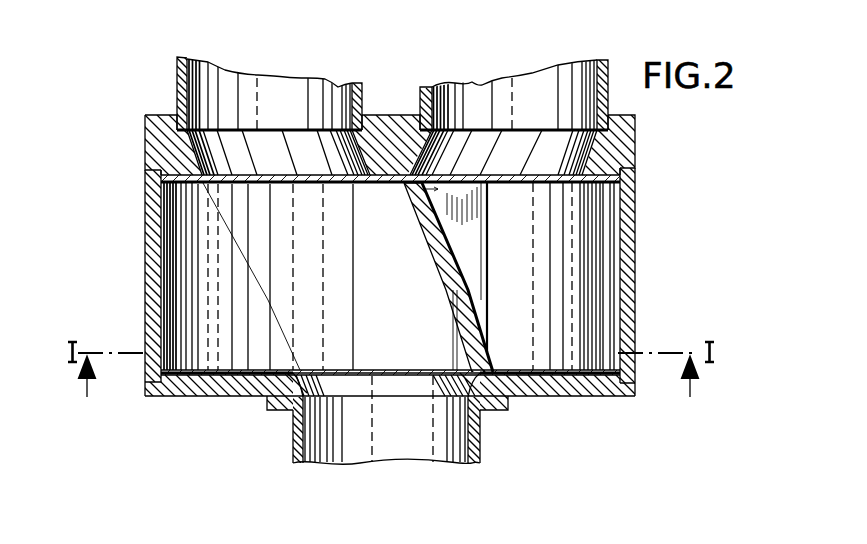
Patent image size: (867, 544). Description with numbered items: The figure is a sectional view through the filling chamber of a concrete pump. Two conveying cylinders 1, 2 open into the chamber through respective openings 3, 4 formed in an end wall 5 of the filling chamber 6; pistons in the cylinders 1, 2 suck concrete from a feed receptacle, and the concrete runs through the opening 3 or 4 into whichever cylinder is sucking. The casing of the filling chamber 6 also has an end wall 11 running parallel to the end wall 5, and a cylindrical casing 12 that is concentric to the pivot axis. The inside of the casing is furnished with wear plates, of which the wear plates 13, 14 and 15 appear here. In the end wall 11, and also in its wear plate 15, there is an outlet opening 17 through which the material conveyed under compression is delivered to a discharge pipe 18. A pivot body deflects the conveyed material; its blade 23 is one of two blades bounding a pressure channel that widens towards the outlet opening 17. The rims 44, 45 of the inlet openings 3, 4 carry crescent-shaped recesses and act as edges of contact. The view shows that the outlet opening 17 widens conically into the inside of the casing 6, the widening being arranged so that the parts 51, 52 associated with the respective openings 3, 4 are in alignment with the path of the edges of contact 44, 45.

The conveying cylinder 1 is at (534, 92).
The conveying cylinder 2 is at (286, 88).
The opening 3 is at (527, 183).
The opening 4 is at (313, 183).
The end wall 5 is at (626, 151).
The filling chamber 6 is at (646, 251).
The end wall 11 is at (223, 386).
The cylindrical casing 12 is at (150, 207).
The wear plate 13 is at (165, 270).
The wear plate 14 is at (402, 183).
The wear plate 15 is at (216, 370).
The outlet opening 17 is at (413, 388).
The discharge pipe 18 is at (298, 426).
The blade 23 is at (473, 297).
The rim 44 is at (574, 165).
The rim 45 is at (204, 168).
The part 51 is at (303, 370).
The part 52 is at (455, 372).